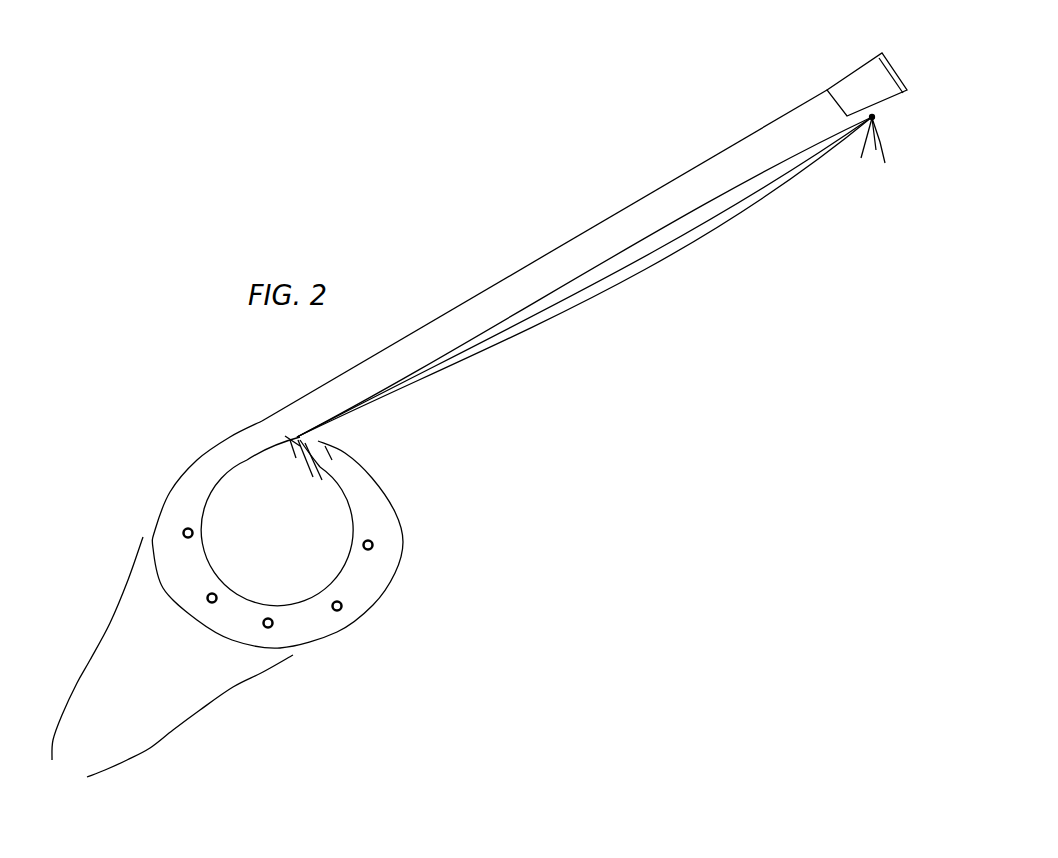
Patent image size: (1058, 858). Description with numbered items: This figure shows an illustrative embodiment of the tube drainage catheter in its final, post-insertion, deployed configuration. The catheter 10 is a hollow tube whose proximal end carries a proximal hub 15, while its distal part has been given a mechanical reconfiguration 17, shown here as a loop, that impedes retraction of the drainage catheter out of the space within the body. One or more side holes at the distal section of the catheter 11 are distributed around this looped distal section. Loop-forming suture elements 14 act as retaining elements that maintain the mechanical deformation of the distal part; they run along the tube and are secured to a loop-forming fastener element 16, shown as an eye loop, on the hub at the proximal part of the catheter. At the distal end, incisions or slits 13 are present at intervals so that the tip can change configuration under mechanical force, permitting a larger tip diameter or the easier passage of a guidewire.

The tubular shaft 10 is at (590, 250).
The side holes at a distal section of the catheter 11 is at (348, 608).
The incisions or slits 13 is at (315, 442).
The loop-forming suture elements 14 is at (650, 266).
The proximal hub 15 is at (847, 71).
The loop-forming fastener element 16 is at (870, 120).
The mechanical reconfiguration 17 is at (169, 673).